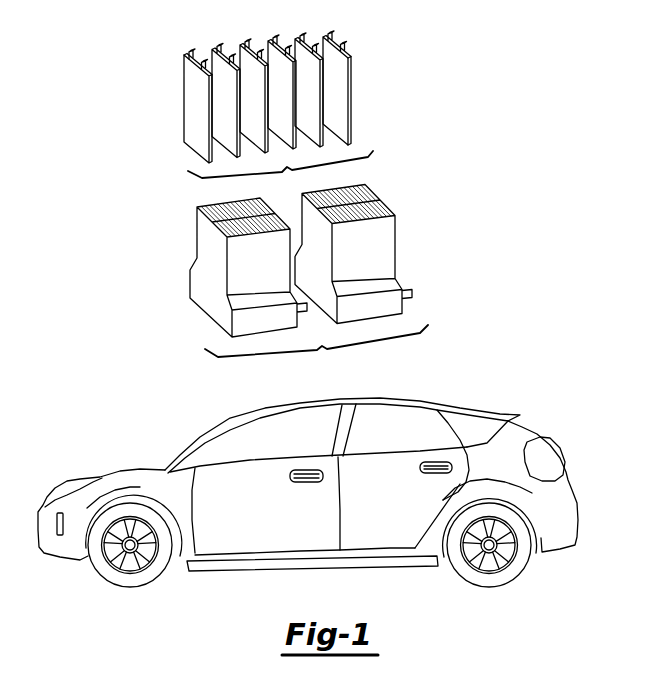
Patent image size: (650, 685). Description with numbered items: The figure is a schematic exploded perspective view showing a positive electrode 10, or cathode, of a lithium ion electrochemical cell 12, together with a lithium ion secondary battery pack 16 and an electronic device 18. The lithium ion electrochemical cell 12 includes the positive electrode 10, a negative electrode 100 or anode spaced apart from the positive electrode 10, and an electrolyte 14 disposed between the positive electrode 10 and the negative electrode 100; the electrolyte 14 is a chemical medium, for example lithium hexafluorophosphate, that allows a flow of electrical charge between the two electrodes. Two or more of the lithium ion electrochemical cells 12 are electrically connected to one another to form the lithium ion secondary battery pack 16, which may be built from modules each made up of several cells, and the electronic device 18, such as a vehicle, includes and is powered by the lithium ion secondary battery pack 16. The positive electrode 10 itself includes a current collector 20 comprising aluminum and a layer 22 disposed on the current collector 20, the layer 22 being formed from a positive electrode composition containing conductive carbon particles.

The negative electrode 100 is at (345, 50).
The positive electrode 10 is at (327, 33).
The lithium ion electrochemical cell 12 is at (352, 98).
The electrolyte 14 is at (191, 100).
The lithium ion secondary battery pack 16 is at (400, 247).
The electronic device 18 is at (458, 403).
The current collector 20 is at (191, 50).
The layer 22 is at (188, 57).